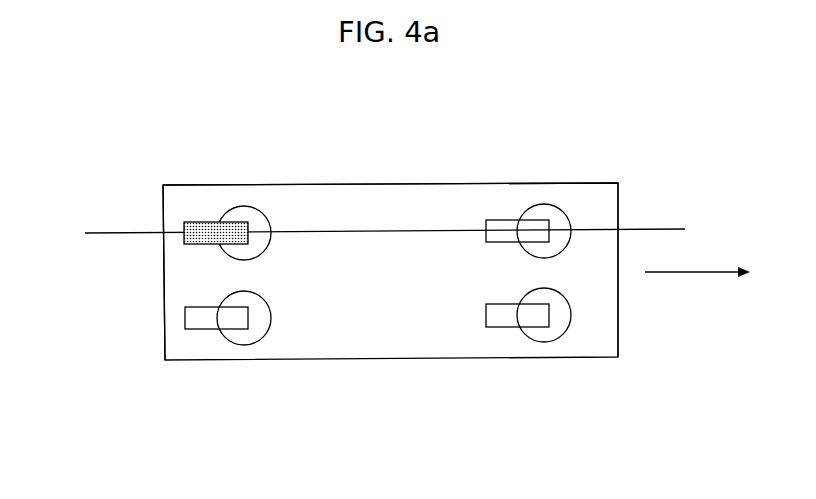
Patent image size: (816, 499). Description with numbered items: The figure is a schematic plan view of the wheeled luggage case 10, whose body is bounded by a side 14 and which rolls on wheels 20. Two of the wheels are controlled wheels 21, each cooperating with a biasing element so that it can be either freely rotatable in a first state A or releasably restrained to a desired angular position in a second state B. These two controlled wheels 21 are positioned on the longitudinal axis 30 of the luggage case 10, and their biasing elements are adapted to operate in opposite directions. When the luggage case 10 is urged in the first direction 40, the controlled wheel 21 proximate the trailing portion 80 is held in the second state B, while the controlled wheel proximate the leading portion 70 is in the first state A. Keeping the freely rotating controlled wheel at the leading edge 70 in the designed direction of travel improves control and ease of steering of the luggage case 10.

The luggage case 10 is at (474, 130).
The side 14 is at (422, 183).
The wheel 20 is at (258, 325).
The controlled wheel 21 is at (260, 225).
The longitudinal axis 30 is at (137, 232).
The first direction 40 is at (697, 280).
The leading portion 70 is at (626, 314).
The trailing portion 80 is at (145, 348).